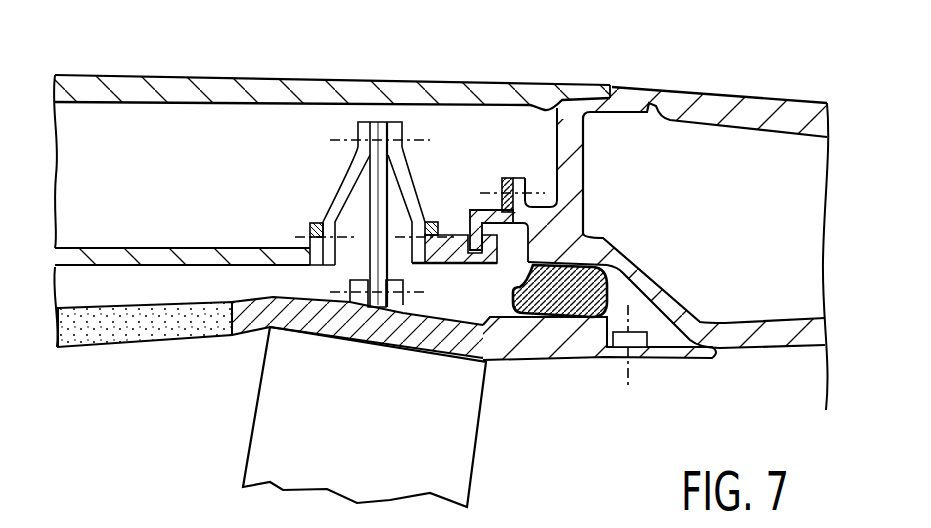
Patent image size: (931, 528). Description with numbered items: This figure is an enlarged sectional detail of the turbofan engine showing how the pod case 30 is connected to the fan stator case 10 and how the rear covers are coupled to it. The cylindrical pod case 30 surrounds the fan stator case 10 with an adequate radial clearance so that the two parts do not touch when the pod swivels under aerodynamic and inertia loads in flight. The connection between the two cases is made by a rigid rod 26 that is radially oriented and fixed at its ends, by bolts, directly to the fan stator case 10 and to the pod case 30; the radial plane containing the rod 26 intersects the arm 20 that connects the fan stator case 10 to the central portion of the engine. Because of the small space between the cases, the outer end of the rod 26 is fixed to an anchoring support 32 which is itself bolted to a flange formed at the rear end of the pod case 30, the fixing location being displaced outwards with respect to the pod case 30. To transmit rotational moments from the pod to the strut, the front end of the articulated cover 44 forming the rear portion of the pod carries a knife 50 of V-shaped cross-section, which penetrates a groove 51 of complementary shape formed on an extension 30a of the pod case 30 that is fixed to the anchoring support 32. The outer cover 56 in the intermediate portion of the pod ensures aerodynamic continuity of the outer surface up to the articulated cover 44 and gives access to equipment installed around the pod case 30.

The outer cover 56 is at (147, 88).
The rod 26 is at (377, 128).
The cover 44 is at (758, 90).
The knife 50 is at (469, 210).
The groove 51 is at (540, 260).
The pod case 30 is at (147, 256).
The anchoring support 32 is at (405, 193).
The fan stator case 10 is at (132, 325).
The arm 20 is at (293, 432).
The extension 30a is at (440, 257).